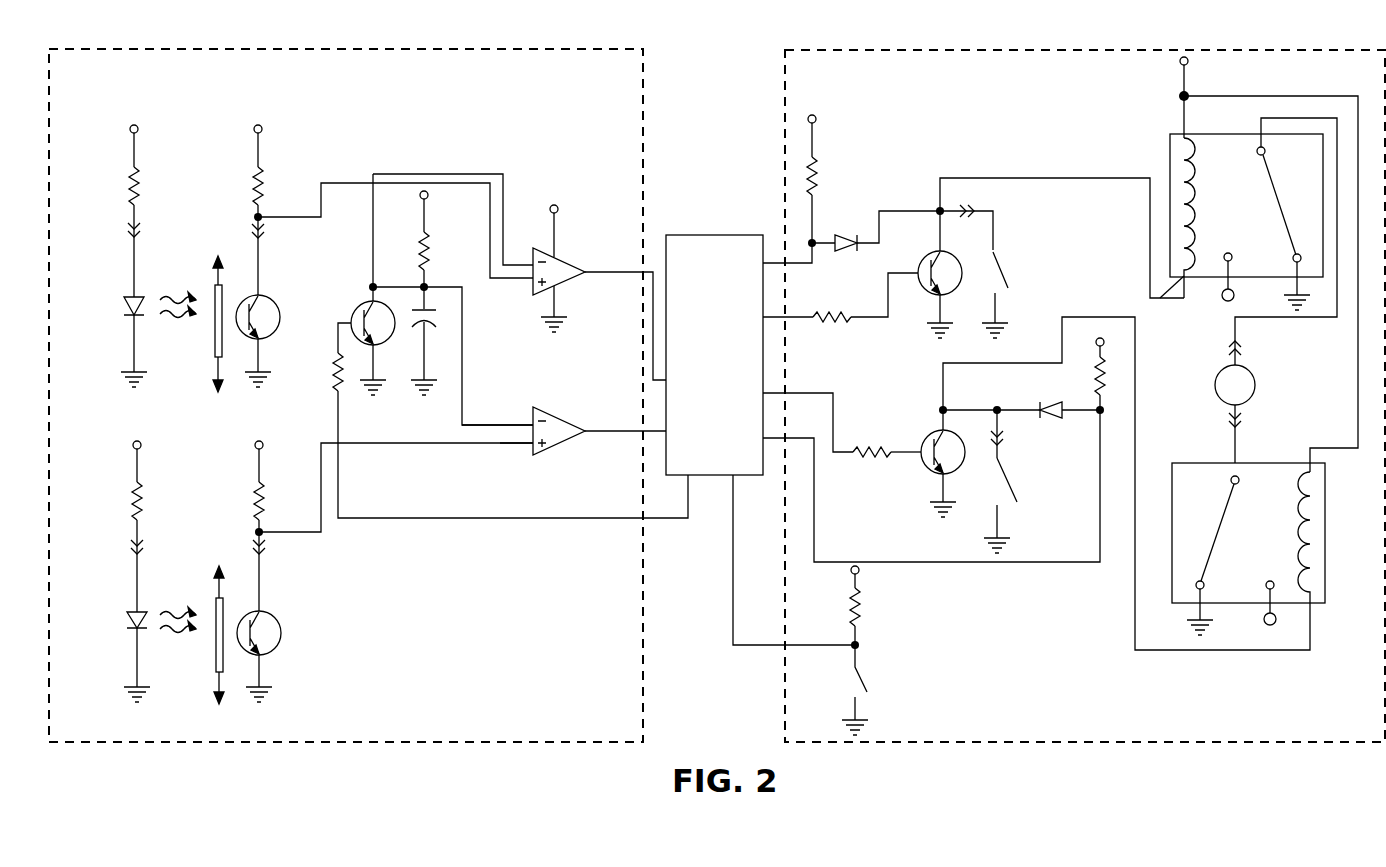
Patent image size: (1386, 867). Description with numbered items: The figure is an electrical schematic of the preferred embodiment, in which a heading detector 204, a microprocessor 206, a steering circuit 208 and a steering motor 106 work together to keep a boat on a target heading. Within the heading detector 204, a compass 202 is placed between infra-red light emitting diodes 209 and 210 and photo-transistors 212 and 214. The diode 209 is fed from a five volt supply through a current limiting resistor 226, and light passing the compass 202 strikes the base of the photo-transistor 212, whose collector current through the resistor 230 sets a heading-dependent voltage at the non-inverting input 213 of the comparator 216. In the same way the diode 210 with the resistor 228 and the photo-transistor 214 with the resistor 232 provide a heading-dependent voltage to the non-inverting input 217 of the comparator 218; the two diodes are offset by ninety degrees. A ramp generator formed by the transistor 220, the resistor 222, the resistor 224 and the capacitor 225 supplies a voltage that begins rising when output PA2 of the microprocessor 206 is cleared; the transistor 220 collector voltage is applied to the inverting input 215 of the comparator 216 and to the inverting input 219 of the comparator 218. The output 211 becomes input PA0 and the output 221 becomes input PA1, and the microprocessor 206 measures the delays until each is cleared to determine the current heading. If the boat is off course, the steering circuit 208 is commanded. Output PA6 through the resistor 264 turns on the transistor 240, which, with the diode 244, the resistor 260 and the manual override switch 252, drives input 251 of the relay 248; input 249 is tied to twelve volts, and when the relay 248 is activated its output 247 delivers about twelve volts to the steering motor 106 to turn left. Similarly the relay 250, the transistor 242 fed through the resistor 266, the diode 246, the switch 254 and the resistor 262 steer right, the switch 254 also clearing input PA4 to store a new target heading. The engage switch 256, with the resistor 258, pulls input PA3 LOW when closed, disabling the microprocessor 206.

The steering motor 106 is at (1272, 379).
The compass 202 is at (215, 327).
The heading detector 204 is at (470, 742).
The microprocessor 206 is at (720, 234).
The steering circuit 208 is at (923, 742).
The infra-red light emitting diode 209 is at (124, 300).
The infra-red light emitting diode 210 is at (125, 626).
The output of comparator 211 is at (586, 270).
The photo-transistor 212 is at (288, 308).
The non-inverting input 213 is at (535, 283).
The photo-transistor 214 is at (282, 628).
The inverting input 215 is at (535, 260).
The comparator 216 is at (566, 287).
The non-inverting input 217 is at (530, 452).
The comparator 218 is at (555, 450).
The inverting input 219 is at (526, 418).
The transistor 220 is at (353, 298).
The output of comparator 221 is at (586, 428).
The resistor 222 is at (332, 381).
The resistor 224 is at (446, 252).
The capacitor 225 is at (442, 306).
The current limiting resistor 226 is at (156, 188).
The resistor 228 is at (158, 504).
The resistor 230 is at (280, 186).
The resistor 232 is at (270, 505).
The transistor 240 is at (924, 260).
The transistor 242 is at (930, 432).
The diode 244 is at (846, 236).
The diode 246 is at (1047, 420).
The output of relay 247 is at (1266, 150).
The relay 248 is at (1170, 167).
The input of relay 249 is at (1180, 96).
The relay 250 is at (1330, 563).
The input of relay 251 is at (1168, 302).
The switch 252 is at (1018, 266).
The switch 254 is at (1012, 478).
The engage switch 256 is at (864, 677).
The resistor 258 is at (862, 614).
The resistor 260 is at (822, 172).
The resistor 262 is at (1106, 388).
The resistor 264 is at (836, 314).
The resistor 266 is at (882, 434).